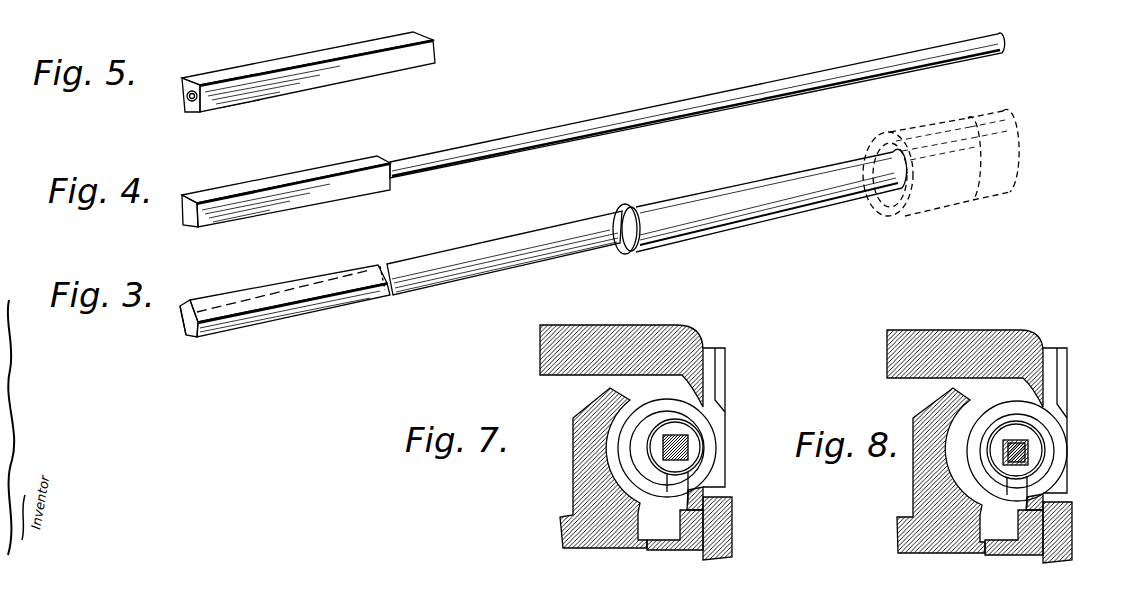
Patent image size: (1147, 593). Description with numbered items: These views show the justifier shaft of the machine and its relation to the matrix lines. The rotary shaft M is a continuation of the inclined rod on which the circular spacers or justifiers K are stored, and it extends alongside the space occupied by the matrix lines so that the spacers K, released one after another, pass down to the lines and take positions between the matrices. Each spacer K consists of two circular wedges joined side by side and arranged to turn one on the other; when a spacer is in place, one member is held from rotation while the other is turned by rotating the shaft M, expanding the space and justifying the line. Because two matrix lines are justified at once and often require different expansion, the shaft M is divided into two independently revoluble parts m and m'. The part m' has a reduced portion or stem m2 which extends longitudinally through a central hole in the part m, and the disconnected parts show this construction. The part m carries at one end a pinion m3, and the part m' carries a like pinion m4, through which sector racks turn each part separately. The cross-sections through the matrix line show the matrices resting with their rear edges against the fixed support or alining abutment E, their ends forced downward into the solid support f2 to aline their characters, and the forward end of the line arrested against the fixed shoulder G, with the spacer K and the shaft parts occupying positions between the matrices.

In FIG. 5, the justifier shaft part m is at (308, 70).
In FIG. 3, the justifier shaft part m is at (760, 201).
In FIG. 8, the justifier shaft part m is at (1057, 450).
In FIG. 4, the justifier shaft part m' is at (286, 186).
In FIG. 3, the justifier shaft part m' is at (285, 297).
In FIG. 7, the justifier shaft part m' is at (711, 455).
In FIG. 4, the reduced portion or stem m2 is at (707, 92).
In FIG. 8, the reduced portion or stem m2 is at (1033, 462).
In FIG. 3, the pinion m3 is at (940, 208).
In FIG. 3, the pinion m4 is at (1000, 195).
In FIG. 3, the rotary shaft M is at (500, 253).
In FIG. 8, the rotary shaft M is at (1033, 453).
In FIG. 7, the fixed support or alining abutment E is at (621, 366).
In FIG. 8, the fixed support or alining abutment E is at (965, 368).
In FIG. 7, the fixed shoulder G is at (728, 410).
In FIG. 8, the fixed shoulder G is at (1067, 423).
In FIG. 7, the circular spacers or justifiers K is at (705, 429).
In FIG. 8, the circular spacers or justifiers K is at (1048, 432).
In FIG. 7, the solid support f2 is at (715, 503).
In FIG. 8, the solid support f2 is at (1055, 510).